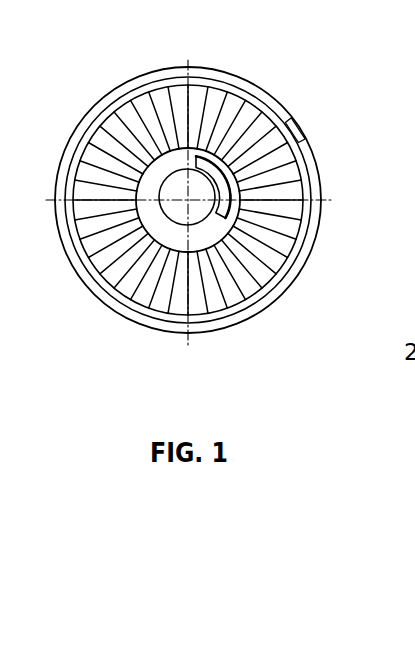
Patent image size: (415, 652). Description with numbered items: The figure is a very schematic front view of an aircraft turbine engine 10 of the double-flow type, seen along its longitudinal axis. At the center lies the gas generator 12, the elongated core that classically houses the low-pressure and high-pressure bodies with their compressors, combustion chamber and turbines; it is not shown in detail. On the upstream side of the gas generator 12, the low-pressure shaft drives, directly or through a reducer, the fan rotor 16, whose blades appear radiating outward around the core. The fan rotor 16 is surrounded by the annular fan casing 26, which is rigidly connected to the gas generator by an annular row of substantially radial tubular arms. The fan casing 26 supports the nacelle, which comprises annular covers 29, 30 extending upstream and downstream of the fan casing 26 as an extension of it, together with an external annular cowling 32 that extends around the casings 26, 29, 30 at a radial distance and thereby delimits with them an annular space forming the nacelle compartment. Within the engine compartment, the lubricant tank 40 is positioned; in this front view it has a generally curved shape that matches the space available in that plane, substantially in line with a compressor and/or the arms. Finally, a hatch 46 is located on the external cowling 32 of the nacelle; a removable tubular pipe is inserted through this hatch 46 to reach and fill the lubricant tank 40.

The turbine engine 10 is at (109, 92).
The gas generator 12 is at (170, 236).
The fan rotor 16 is at (291, 177).
The fan casing 26 is at (217, 216).
The annular cover 29 is at (217, 216).
The annular cover 30 is at (306, 207).
The external annular cowling 32 is at (312, 147).
The lubricant tank 40 is at (220, 165).
The hatch 46 is at (298, 117).